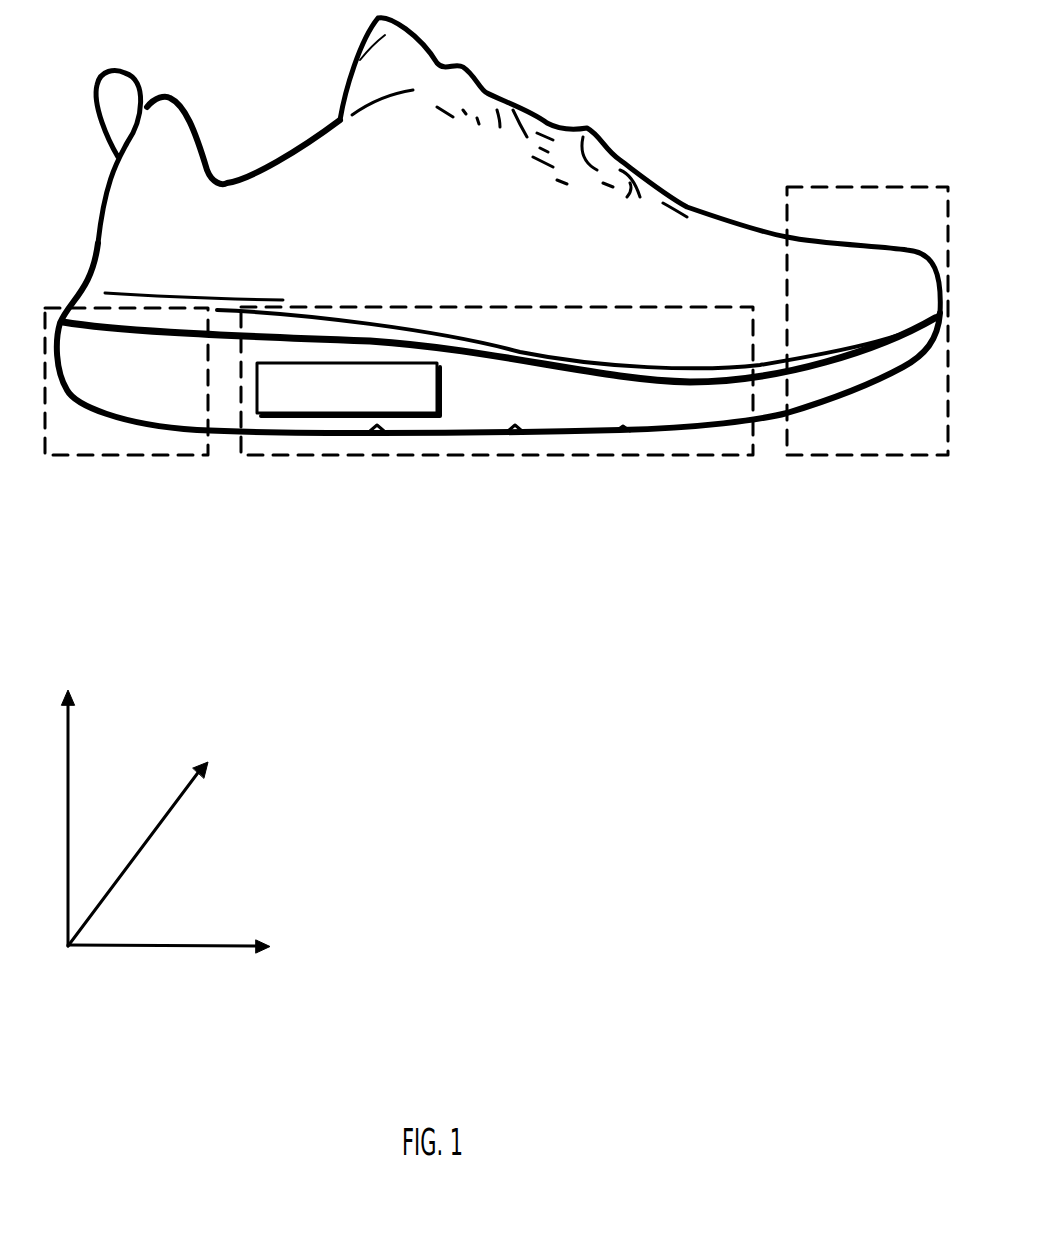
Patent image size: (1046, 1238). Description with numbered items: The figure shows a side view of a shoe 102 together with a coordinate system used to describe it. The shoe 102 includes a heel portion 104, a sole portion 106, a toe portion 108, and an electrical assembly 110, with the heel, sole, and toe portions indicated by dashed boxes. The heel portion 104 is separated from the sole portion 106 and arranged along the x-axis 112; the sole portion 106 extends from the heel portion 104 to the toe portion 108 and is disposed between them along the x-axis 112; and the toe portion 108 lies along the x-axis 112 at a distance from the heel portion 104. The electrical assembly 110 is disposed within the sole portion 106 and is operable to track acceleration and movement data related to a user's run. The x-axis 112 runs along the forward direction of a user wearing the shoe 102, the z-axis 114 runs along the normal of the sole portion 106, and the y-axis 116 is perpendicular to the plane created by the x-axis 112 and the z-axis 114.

The shoe 102 is at (498, 465).
The heel portion 104 is at (125, 455).
The sole portion 106 is at (500, 453).
The toe portion 108 is at (867, 455).
The electrical assembly 110 is at (358, 399).
The x-axis 112 is at (175, 948).
The z-axis 114 is at (68, 737).
The y-axis 116 is at (177, 805).